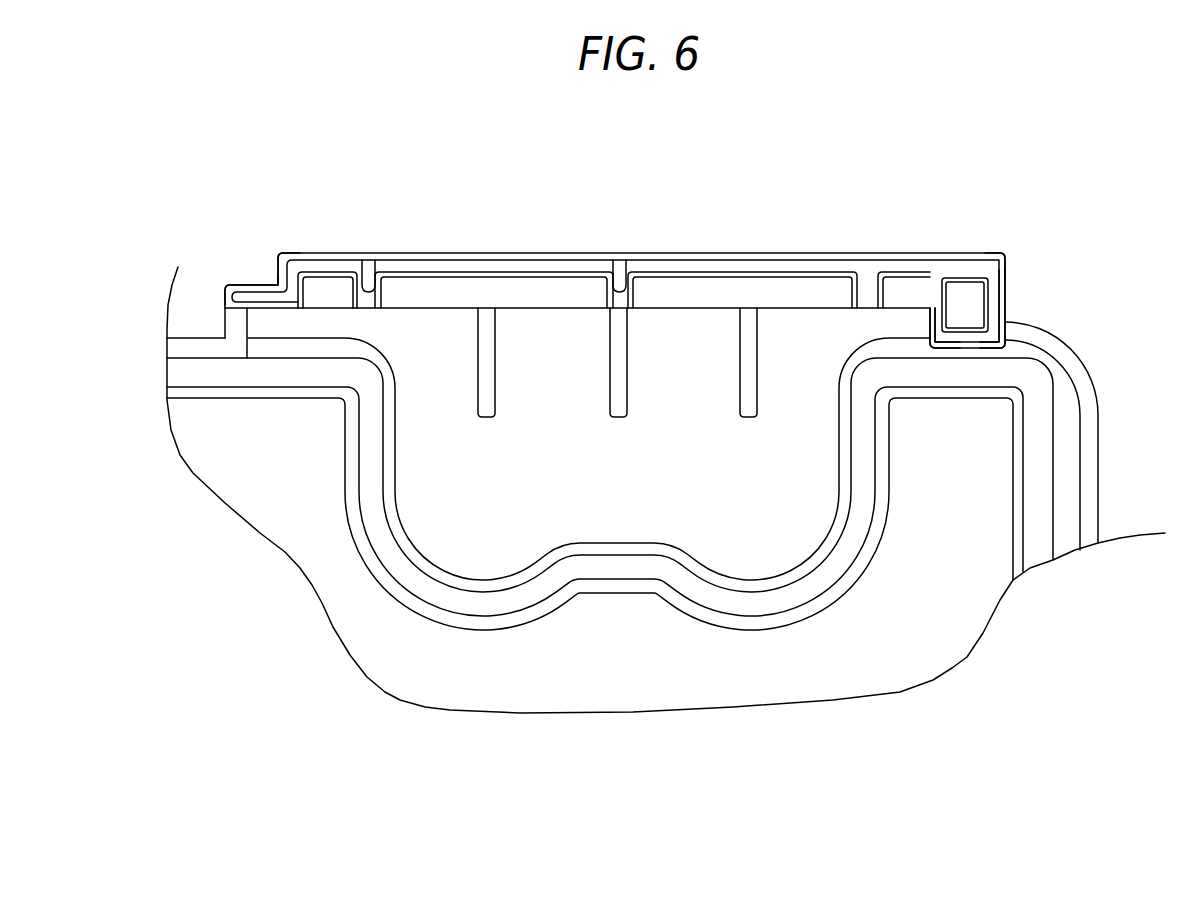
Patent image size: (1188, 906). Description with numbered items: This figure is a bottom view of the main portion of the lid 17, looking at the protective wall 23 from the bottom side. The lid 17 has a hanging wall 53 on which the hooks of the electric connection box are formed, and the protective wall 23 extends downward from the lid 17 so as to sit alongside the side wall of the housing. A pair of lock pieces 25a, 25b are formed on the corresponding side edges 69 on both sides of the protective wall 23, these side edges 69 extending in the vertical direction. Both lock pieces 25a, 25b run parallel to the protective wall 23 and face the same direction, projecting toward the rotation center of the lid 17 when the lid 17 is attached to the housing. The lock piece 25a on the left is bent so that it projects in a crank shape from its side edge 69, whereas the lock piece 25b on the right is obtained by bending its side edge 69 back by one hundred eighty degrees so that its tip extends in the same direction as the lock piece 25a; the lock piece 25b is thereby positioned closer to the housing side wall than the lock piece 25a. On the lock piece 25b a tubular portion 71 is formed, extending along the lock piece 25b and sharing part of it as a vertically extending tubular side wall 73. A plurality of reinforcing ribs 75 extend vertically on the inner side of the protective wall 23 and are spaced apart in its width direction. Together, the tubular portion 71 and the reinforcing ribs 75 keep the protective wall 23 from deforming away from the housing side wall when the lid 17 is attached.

The lid 17 is at (684, 658).
The protective wall 23 is at (525, 245).
The lock piece 25a is at (249, 287).
The lock piece 25b is at (963, 337).
The hanging wall 53 is at (1093, 428).
The side edge 69 is at (271, 268).
The tubular portion 71 is at (1020, 292).
The tubular side wall 73 is at (928, 325).
The reinforcing rib 75 is at (366, 304).